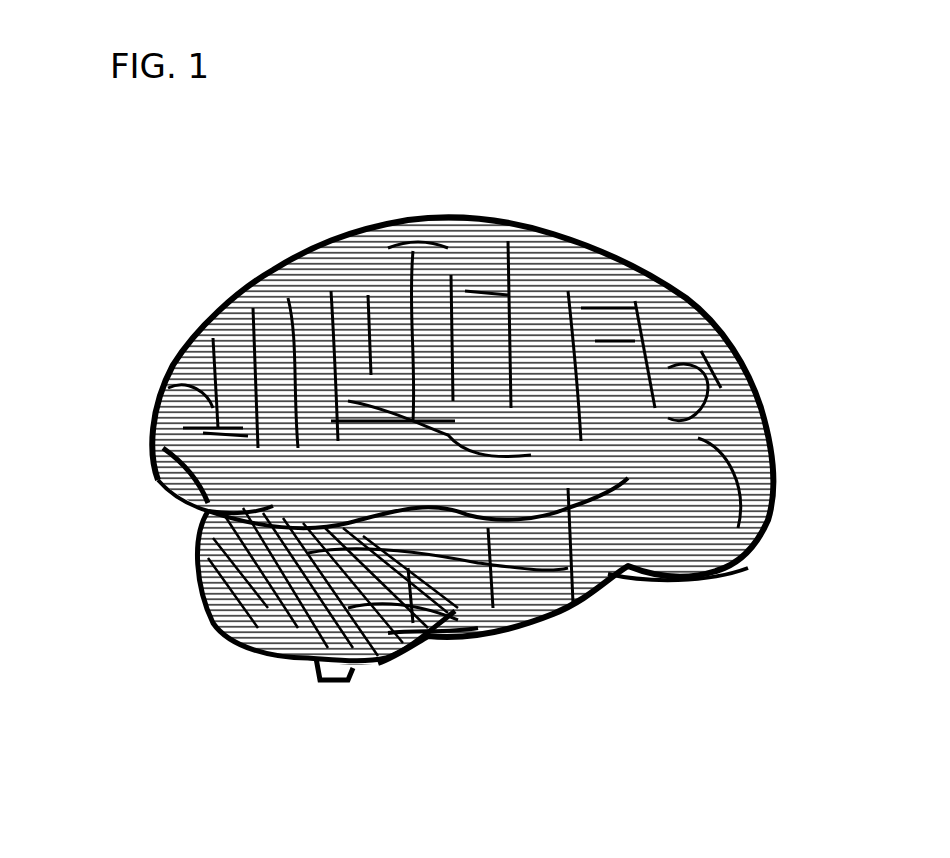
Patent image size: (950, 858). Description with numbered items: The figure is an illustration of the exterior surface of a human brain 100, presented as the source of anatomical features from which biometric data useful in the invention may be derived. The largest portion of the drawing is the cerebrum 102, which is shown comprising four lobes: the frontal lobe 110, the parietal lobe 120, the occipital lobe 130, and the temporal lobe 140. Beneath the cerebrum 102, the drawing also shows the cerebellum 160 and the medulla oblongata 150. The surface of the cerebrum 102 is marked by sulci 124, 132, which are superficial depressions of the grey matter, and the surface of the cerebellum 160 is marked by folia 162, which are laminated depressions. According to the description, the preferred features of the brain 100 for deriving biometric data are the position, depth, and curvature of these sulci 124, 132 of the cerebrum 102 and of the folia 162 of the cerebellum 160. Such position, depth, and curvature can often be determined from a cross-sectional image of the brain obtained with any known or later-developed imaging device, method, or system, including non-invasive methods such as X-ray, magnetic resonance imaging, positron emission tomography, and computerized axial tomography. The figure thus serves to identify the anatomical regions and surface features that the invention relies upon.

The human brain 100 is at (535, 118).
The cerebrum 102 is at (645, 225).
The frontal lobe 110 is at (720, 390).
The parietal lobe 120 is at (400, 235).
The sulcus 124 is at (533, 445).
The occipital lobe 130 is at (176, 441).
The sulcus 132 is at (198, 425).
The temporal lobe 140 is at (535, 573).
The medulla oblongata 150 is at (382, 662).
The cerebellum 160 is at (215, 643).
The folia 162 is at (305, 620).